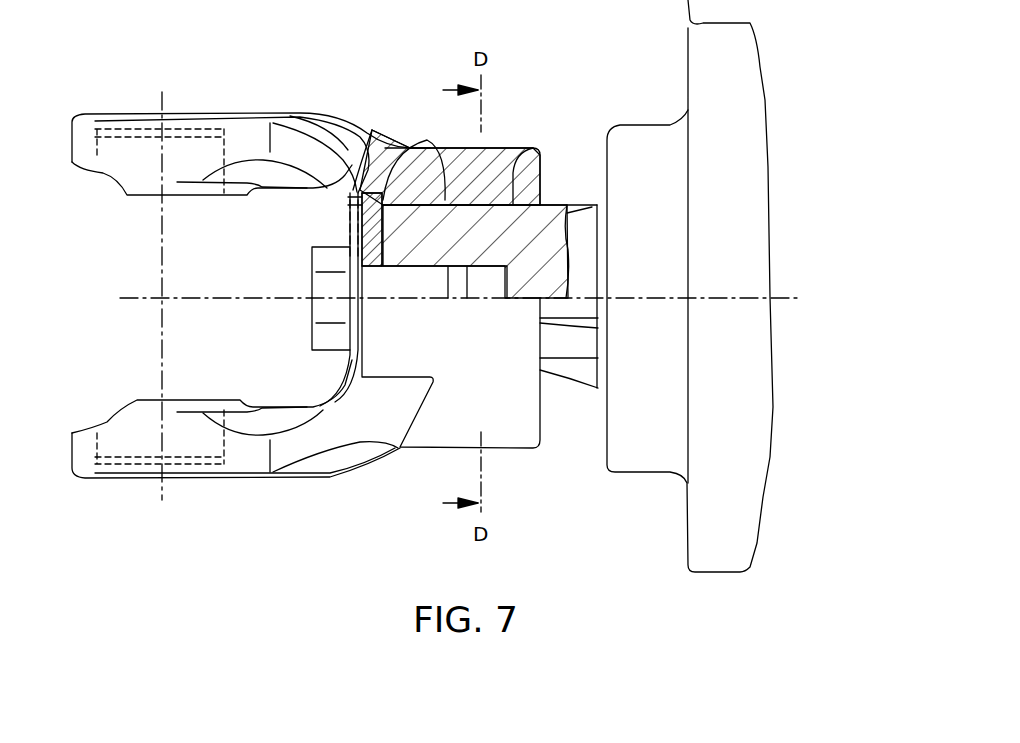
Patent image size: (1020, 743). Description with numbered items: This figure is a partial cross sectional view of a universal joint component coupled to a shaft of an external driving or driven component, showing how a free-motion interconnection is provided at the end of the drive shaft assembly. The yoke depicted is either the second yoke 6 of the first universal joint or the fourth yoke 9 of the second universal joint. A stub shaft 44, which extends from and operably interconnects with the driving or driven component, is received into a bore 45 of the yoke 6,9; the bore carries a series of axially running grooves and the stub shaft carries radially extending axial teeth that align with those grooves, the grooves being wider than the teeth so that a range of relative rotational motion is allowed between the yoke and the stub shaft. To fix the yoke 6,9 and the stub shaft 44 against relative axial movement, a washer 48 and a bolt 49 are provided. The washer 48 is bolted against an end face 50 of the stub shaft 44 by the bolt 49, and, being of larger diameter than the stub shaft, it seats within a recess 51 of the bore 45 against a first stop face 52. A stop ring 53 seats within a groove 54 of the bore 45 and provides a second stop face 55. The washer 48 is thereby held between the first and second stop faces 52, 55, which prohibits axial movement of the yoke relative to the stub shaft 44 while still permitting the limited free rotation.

The second yoke 6 is at (241, 239).
The fourth yoke 9 is at (218, 113).
The stub shaft 44 is at (580, 203).
The bore 45 is at (533, 146).
The washer 48 is at (340, 237).
The bolt 49 is at (313, 315).
The end face 50 is at (440, 153).
The recess 51 is at (393, 130).
The first stop face 52 is at (413, 130).
The stop ring 53 is at (350, 220).
The groove 54 is at (345, 185).
The second stop face 55 is at (350, 197).